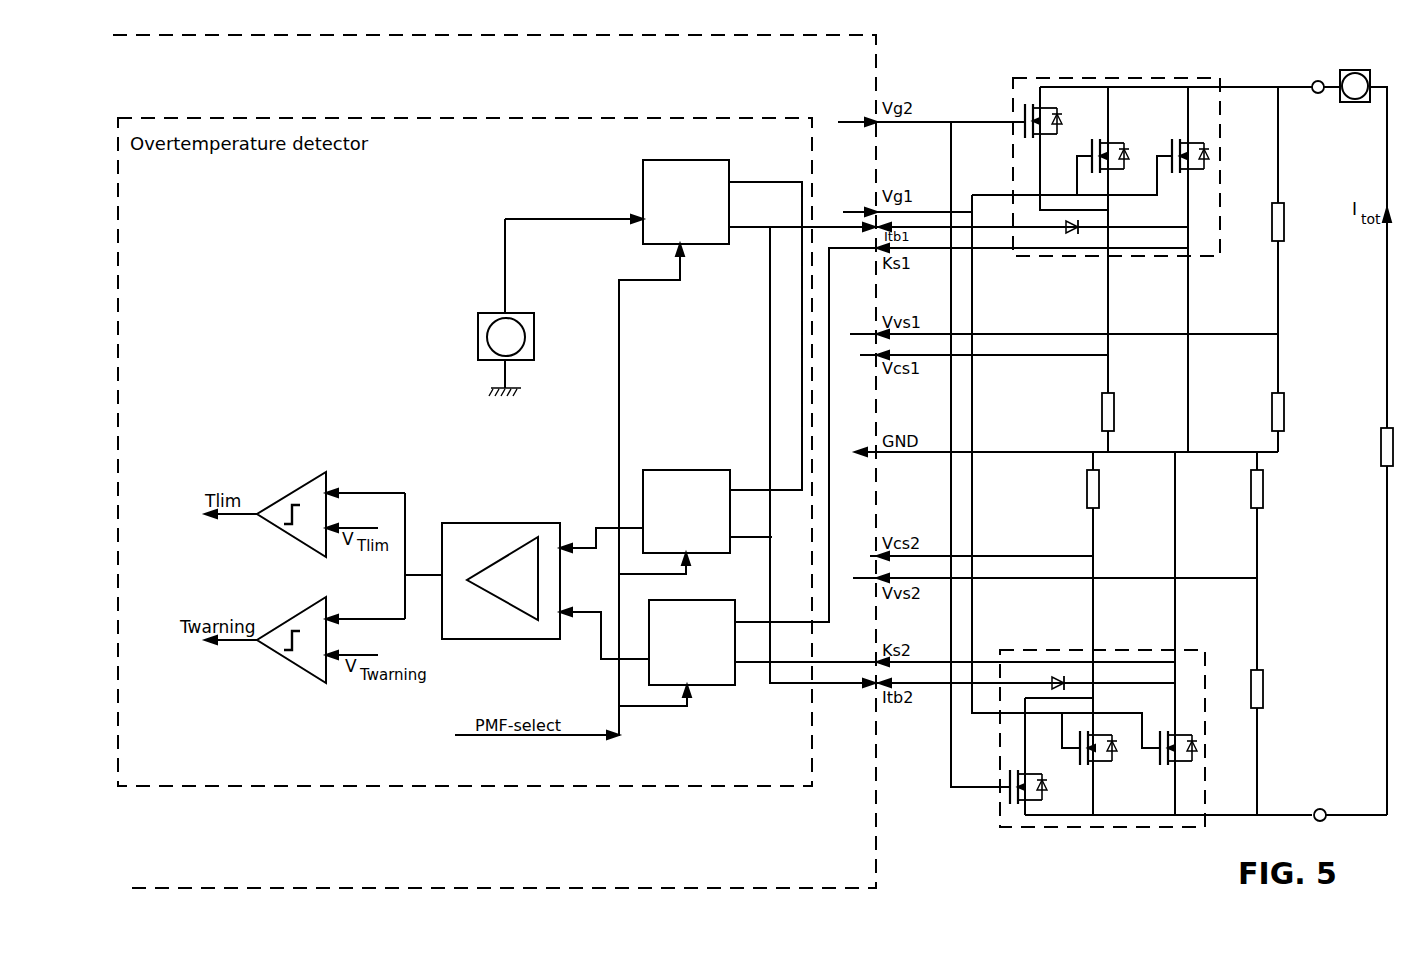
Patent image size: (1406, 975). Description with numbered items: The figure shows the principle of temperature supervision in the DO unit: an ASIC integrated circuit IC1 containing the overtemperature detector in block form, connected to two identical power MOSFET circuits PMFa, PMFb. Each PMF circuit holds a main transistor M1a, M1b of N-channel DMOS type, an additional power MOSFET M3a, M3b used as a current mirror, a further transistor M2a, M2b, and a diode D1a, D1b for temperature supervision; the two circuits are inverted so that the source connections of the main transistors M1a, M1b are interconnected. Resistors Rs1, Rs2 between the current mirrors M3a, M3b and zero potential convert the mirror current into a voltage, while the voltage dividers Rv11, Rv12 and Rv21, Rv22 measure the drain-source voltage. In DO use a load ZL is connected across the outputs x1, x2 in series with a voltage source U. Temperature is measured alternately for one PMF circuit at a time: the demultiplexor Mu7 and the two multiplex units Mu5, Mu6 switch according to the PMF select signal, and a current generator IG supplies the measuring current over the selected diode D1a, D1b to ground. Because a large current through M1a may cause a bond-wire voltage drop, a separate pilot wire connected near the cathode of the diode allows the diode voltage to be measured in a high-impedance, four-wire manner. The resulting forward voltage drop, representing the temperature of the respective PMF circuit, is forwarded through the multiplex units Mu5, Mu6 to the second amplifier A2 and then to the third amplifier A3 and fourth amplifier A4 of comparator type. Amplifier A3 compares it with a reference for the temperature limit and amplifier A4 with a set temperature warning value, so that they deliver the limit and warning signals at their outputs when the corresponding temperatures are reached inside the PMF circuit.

The integrated circuit IC1 is at (494, 461).
The demultiplexer Mu7 is at (702, 244).
The multiplex unit Mu5 is at (698, 470).
The multiplex unit Mu6 is at (700, 685).
The current generator IG is at (496, 307).
The second amplifier A2 is at (483, 523).
The third amplifier A3 is at (297, 492).
The fourth amplifier A4 is at (288, 662).
The power MOSFET circuit PMFa is at (1042, 78).
The power MOSFET circuit PMFb is at (1042, 650).
The main transistor M1a is at (1180, 269).
The transistor M2a is at (1066, 148).
The additional power MOSFET M3a is at (1101, 240).
The main transistor M1b is at (1168, 633).
The transistor M2b is at (1051, 756).
The additional power MOSFET M3b is at (1088, 758).
The diode D1a is at (1059, 234).
The diode D1b is at (1041, 675).
The resistor Rs1 is at (1091, 422).
The resistor Rs2 is at (1075, 633).
The voltage divider resistor Rv11 is at (1297, 240).
The voltage divider resistor Rv12 is at (1300, 418).
The voltage divider resistor Rv21 is at (1279, 733).
The voltage divider resistor Rv22 is at (1279, 561).
The load ZL is at (1371, 621).
The voltage source U is at (1355, 86).
The output x1 is at (1304, 77).
The output x2 is at (1306, 804).